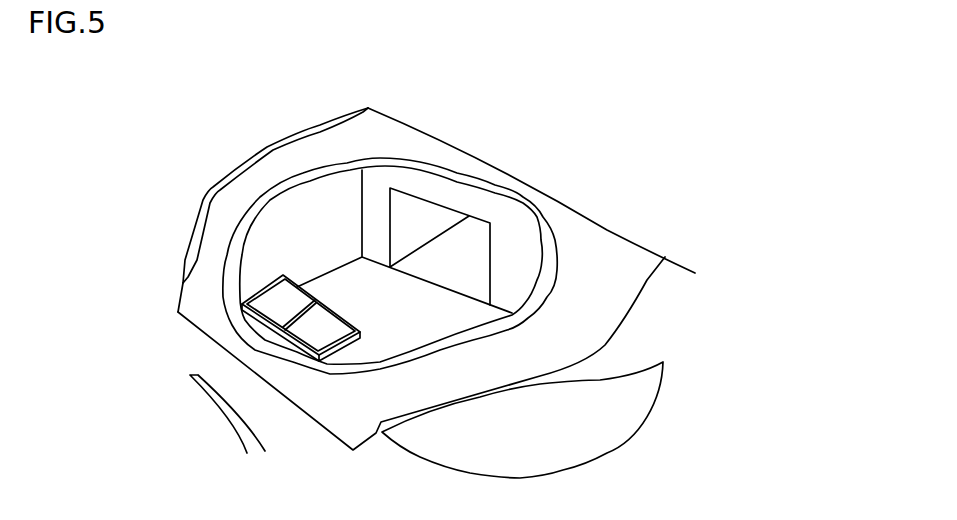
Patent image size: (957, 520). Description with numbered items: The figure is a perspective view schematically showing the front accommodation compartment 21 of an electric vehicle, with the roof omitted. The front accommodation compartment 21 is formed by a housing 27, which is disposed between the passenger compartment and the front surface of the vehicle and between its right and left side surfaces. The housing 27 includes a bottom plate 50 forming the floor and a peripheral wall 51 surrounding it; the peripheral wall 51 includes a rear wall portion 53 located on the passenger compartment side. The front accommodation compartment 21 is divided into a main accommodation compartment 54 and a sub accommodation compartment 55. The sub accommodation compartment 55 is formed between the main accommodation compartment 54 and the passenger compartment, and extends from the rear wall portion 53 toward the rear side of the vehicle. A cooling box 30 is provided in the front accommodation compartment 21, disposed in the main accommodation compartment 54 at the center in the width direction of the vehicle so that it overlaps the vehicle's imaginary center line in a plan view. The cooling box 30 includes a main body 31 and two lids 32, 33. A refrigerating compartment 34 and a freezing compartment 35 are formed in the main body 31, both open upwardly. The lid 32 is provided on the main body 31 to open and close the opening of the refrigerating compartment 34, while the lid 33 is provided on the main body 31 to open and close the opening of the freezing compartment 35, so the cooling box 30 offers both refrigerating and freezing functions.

The front accommodation compartment 21 is at (228, 116).
The housing 27 is at (305, 68).
The bottom plate 50 is at (375, 270).
The peripheral wall 51 is at (322, 190).
The rear wall portion 53 is at (442, 197).
The main accommodation compartment 54 is at (458, 317).
The sub accommodation compartment 55 is at (458, 250).
The cooling box 30 is at (38, 302).
The main body 31 is at (296, 332).
The lid 32 is at (270, 313).
The lid 33 is at (312, 344).
The refrigerating compartment 34 is at (267, 300).
The freezing compartment 35 is at (318, 362).